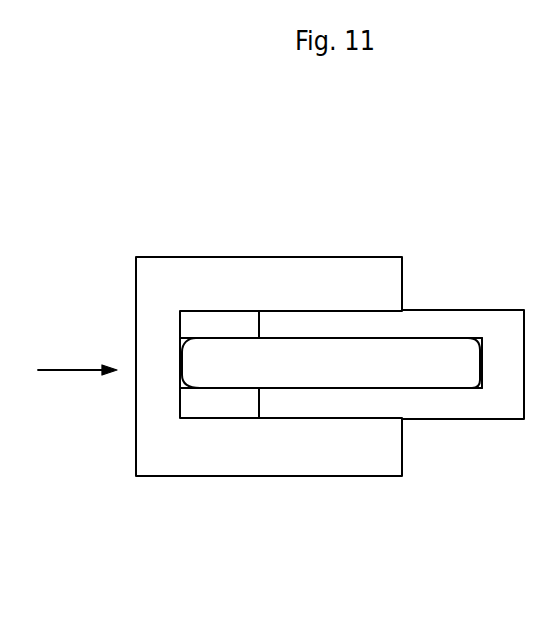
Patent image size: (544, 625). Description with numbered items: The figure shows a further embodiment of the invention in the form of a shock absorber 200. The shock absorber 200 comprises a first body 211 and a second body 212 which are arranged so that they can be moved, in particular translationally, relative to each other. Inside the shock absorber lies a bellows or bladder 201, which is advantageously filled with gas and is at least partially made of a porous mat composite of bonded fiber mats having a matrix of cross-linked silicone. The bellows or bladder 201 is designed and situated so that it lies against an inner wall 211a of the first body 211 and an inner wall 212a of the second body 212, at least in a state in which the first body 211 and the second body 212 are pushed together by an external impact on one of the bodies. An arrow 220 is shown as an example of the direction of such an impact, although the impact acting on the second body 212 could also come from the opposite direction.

The shock absorber 200 is at (353, 228).
The bellows or bladder 201 is at (308, 377).
The first body 211 is at (182, 454).
The inner wall of the first body 211a is at (182, 337).
The second body 212 is at (430, 419).
The inner wall of the second body 212a is at (478, 346).
The arrow 220 is at (77, 354).